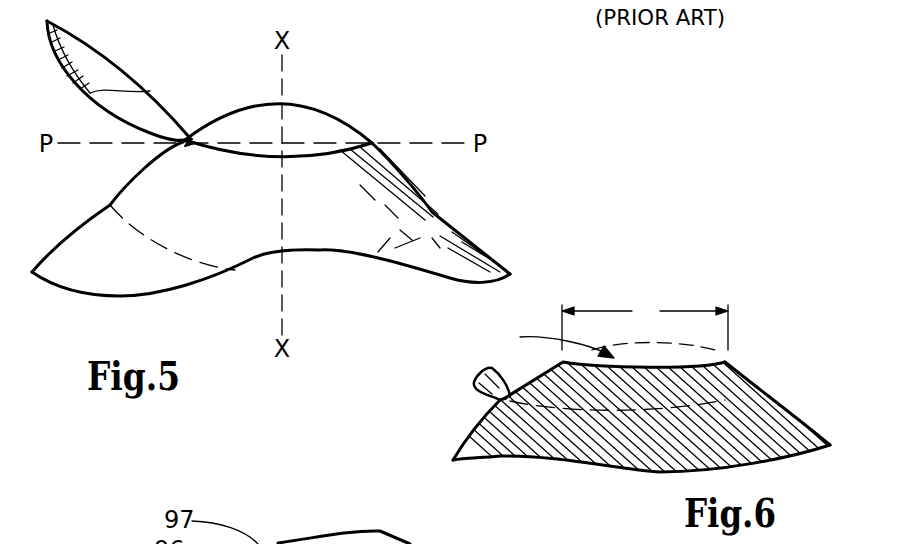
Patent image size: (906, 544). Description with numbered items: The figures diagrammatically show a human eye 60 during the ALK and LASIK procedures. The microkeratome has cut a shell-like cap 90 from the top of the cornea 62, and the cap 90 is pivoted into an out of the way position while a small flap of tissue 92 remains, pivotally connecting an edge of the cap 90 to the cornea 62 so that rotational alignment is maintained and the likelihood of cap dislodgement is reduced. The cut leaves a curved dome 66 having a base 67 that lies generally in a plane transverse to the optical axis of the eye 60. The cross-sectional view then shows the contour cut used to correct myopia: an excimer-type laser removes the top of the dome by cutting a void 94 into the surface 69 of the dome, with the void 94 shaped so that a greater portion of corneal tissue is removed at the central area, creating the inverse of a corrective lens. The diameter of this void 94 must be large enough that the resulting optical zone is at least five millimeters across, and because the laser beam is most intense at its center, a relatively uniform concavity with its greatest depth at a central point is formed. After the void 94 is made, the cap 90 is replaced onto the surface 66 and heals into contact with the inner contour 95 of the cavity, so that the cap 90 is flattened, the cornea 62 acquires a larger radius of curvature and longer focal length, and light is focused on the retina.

In FIG. 5, the eye 60 is at (108, 278).
In FIG. 5, the cornea 62 is at (331, 212).
In FIG. 5, the curved dome 66 is at (303, 117).
In FIG. 6, the curved dome 66 is at (700, 382).
In FIG. 5, the base 67 is at (364, 174).
In FIG. 6, the base 67 is at (720, 400).
In FIG. 5, the surface 69 is at (345, 120).
In FIG. 5, the shell-like cap 90 is at (93, 40).
In FIG. 6, the shell-like cap 90 is at (476, 389).
In FIG. 5, the flap of tissue 92 is at (192, 136).
In FIG. 6, the flap of tissue 92 is at (500, 398).
In FIG. 6, the void 94 is at (548, 341).
In FIG. 6, the inner contour 95 is at (680, 362).